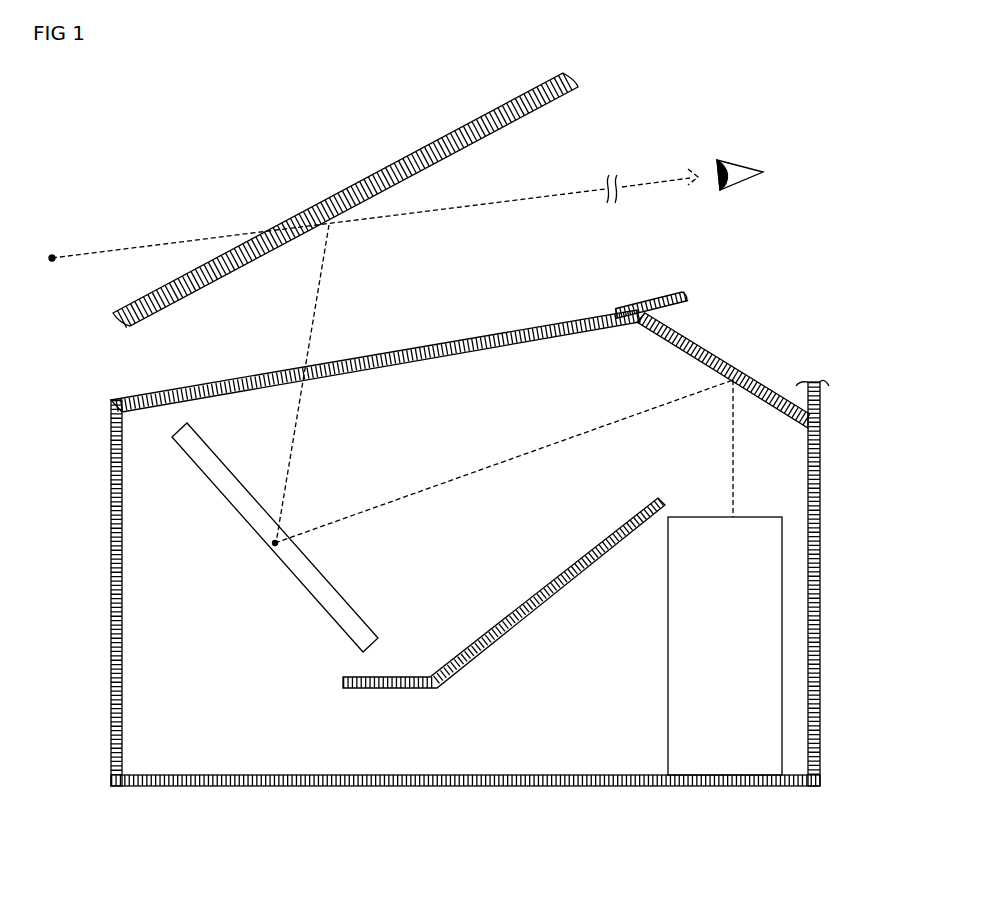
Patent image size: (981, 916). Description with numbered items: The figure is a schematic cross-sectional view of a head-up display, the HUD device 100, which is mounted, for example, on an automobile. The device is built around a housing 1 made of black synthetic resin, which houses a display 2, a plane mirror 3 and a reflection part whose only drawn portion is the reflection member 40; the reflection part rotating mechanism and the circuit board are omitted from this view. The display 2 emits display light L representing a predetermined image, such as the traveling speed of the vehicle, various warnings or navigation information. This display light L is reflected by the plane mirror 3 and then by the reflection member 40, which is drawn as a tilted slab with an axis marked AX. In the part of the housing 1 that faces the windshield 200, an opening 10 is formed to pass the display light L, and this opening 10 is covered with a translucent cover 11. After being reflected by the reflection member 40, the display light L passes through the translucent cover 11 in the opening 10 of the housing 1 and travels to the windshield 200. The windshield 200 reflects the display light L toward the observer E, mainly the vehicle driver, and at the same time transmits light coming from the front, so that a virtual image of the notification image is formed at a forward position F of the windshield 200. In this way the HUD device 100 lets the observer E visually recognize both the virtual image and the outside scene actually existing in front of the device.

The HUD device 100 is at (232, 804).
The housing 1 is at (466, 775).
The translucent cover 11 is at (516, 325).
The opening 10 is at (614, 305).
The plane mirror 3 is at (705, 348).
The reflection member 40 is at (312, 590).
The display 2 is at (707, 690).
The windshield 200 is at (440, 148).
The observer E is at (725, 146).
The forward position F is at (53, 246).
The display light L is at (598, 428).
The optical axis / rotation axis AX is at (274, 545).